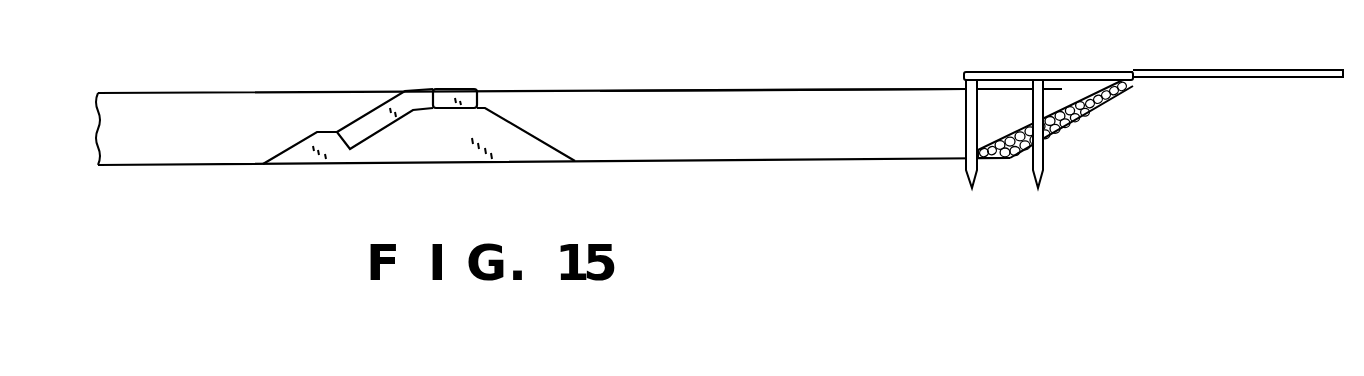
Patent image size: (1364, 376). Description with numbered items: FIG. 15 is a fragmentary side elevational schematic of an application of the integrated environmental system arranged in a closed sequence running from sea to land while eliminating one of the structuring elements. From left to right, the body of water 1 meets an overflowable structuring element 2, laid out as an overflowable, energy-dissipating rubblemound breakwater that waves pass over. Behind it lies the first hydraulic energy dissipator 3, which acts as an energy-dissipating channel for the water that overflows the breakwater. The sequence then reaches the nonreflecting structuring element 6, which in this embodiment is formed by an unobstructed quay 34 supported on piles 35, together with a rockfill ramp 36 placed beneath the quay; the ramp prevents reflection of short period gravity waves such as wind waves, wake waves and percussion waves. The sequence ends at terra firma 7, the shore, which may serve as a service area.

The body of water 1 is at (233, 93).
The overflowable structuring element 2 is at (450, 87).
The first hydraulic energy dissipator 3 is at (737, 88).
The nonreflecting structuring element 6 is at (1083, 70).
The terra firma 7 is at (1273, 68).
The unobstructed quay 34 is at (1002, 70).
The piles 35 is at (1038, 168).
The rockfill ramp 36 is at (1087, 112).